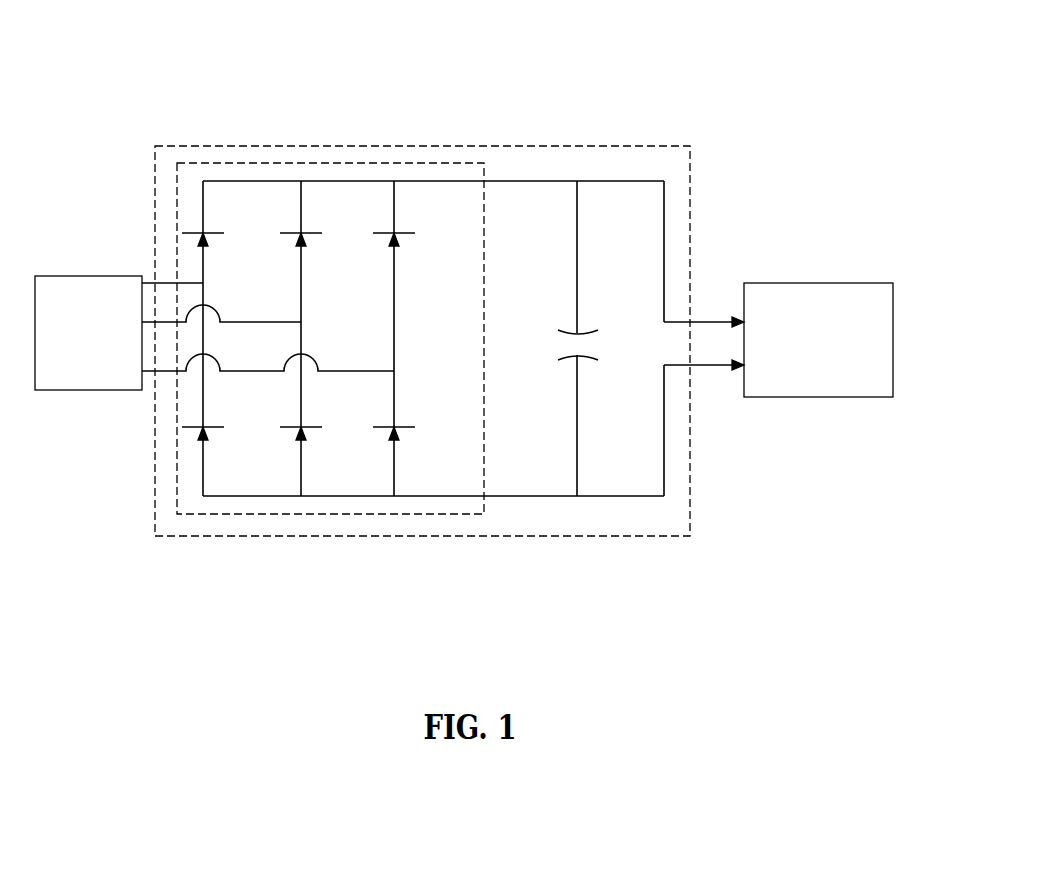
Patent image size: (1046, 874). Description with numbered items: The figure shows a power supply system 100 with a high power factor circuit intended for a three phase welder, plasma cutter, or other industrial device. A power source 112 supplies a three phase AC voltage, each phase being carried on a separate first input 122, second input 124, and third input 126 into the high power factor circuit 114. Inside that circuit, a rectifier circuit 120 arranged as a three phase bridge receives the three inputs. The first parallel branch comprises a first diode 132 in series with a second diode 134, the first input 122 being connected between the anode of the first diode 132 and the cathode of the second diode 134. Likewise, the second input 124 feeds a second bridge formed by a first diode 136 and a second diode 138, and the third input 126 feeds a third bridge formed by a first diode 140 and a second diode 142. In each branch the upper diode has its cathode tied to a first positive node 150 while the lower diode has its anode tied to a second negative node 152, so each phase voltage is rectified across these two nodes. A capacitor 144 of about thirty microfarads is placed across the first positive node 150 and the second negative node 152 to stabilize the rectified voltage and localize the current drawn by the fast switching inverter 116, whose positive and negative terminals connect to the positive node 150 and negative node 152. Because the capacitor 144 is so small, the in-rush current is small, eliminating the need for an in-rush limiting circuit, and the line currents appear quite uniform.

The power supply system 100 is at (762, 39).
The power source 112 is at (75, 276).
The high power factor circuit 114 is at (690, 170).
The inverter 116 is at (823, 283).
The rectifier circuit 120 is at (484, 253).
The first input 122 is at (157, 283).
The second input 124 is at (168, 322).
The third input 126 is at (175, 371).
The first diode 132 is at (211, 238).
The second diode 134 is at (208, 433).
The first diode 136 is at (308, 238).
The second diode 138 is at (306, 433).
The first diode 140 is at (401, 238).
The second diode 142 is at (399, 433).
The capacitor 144 is at (583, 330).
The first positive node 150 is at (577, 205).
The second negative node 152 is at (576, 497).